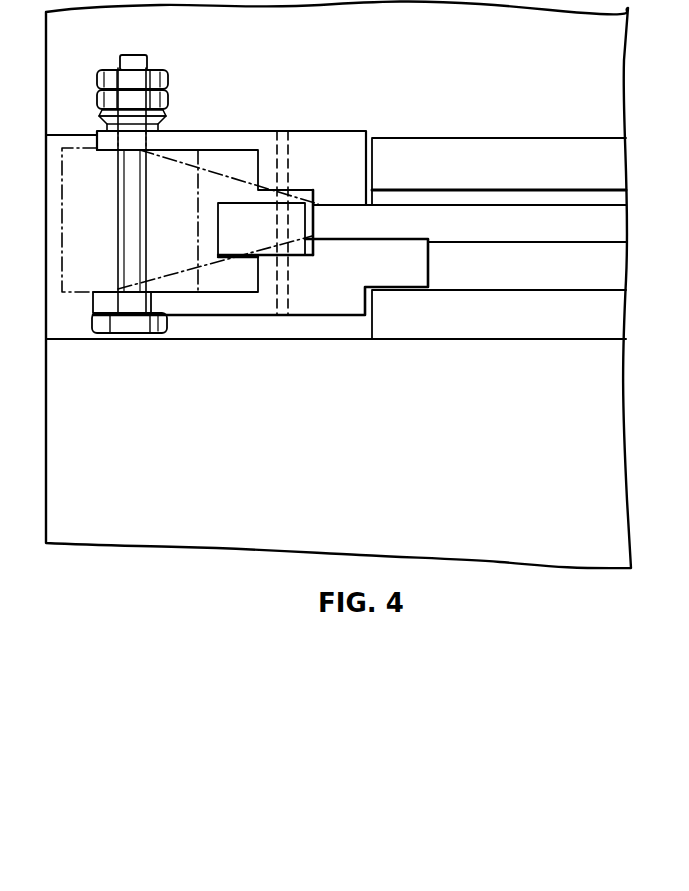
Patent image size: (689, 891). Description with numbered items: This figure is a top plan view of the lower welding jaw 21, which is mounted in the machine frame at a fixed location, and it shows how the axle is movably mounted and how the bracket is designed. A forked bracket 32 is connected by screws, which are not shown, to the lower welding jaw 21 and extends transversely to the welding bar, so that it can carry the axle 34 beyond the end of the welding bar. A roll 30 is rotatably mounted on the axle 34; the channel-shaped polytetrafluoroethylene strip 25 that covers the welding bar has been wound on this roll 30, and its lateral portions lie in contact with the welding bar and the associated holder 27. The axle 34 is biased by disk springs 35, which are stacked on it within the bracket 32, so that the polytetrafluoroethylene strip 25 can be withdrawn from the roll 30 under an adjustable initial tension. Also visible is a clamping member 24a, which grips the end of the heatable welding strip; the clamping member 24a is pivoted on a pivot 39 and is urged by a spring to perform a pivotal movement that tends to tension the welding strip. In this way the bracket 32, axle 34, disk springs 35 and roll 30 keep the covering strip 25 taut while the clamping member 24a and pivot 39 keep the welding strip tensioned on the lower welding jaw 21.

The lower welding jaw 21 is at (477, 153).
The clamping member 24a is at (237, 240).
The polytetrafluoroethylene strip 25 is at (185, 163).
The holder 27 is at (563, 218).
The roll 30 is at (65, 265).
The forked bracket 32 is at (250, 135).
The axle 34 is at (126, 218).
The disk springs 35 is at (102, 117).
The pivot 39 is at (282, 304).